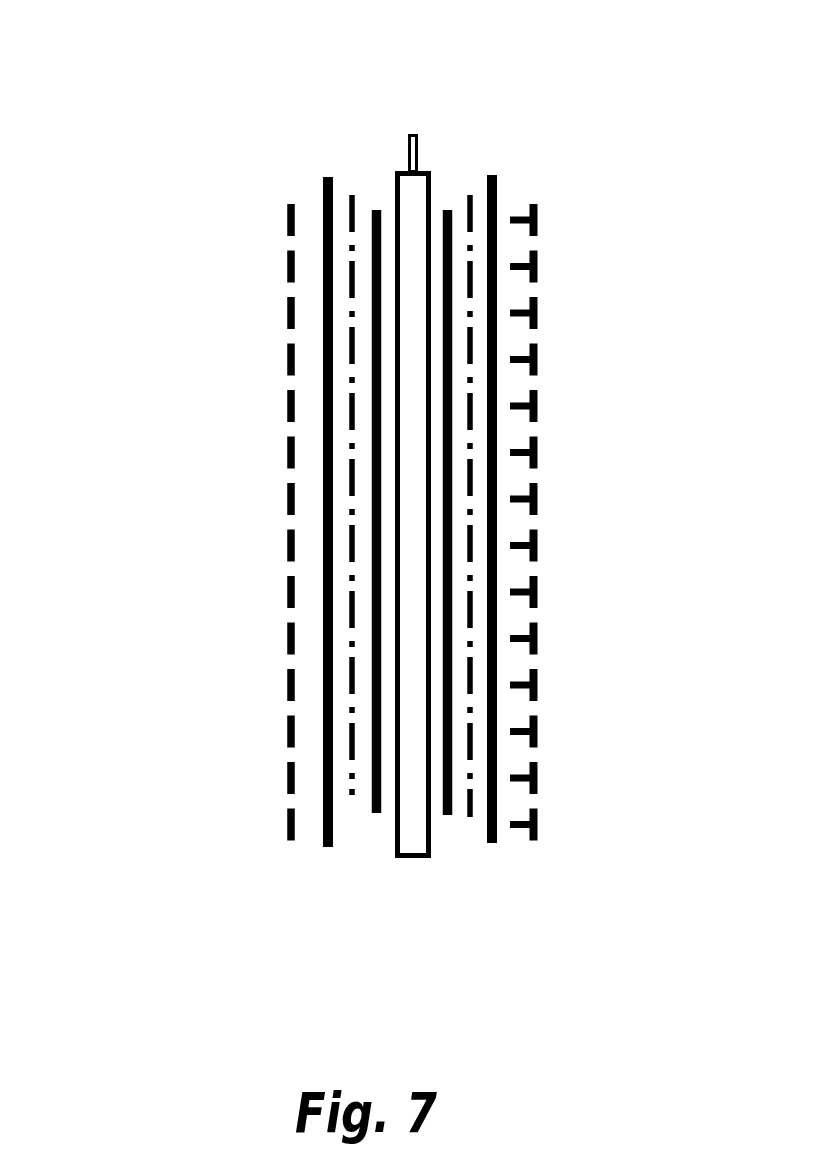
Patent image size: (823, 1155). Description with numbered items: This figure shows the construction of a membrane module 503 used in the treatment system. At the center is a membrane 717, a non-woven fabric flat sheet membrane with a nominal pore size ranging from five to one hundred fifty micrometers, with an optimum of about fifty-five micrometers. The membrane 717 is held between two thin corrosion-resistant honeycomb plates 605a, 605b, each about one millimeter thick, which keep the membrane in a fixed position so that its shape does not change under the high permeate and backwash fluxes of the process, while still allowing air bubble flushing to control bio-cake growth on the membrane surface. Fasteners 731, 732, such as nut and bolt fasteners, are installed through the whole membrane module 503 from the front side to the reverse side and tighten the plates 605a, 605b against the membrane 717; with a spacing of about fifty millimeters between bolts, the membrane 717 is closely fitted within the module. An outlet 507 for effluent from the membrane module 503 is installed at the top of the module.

The membrane module 503 is at (222, 153).
The outlet 507 is at (411, 140).
The thin corrosion-resistant honeycomb plate 605a is at (322, 853).
The thin corrosion-resistant honeycomb plate 605b is at (448, 210).
The membrane 717 is at (470, 817).
The fastener 731 is at (537, 637).
The fastener 732 is at (288, 590).